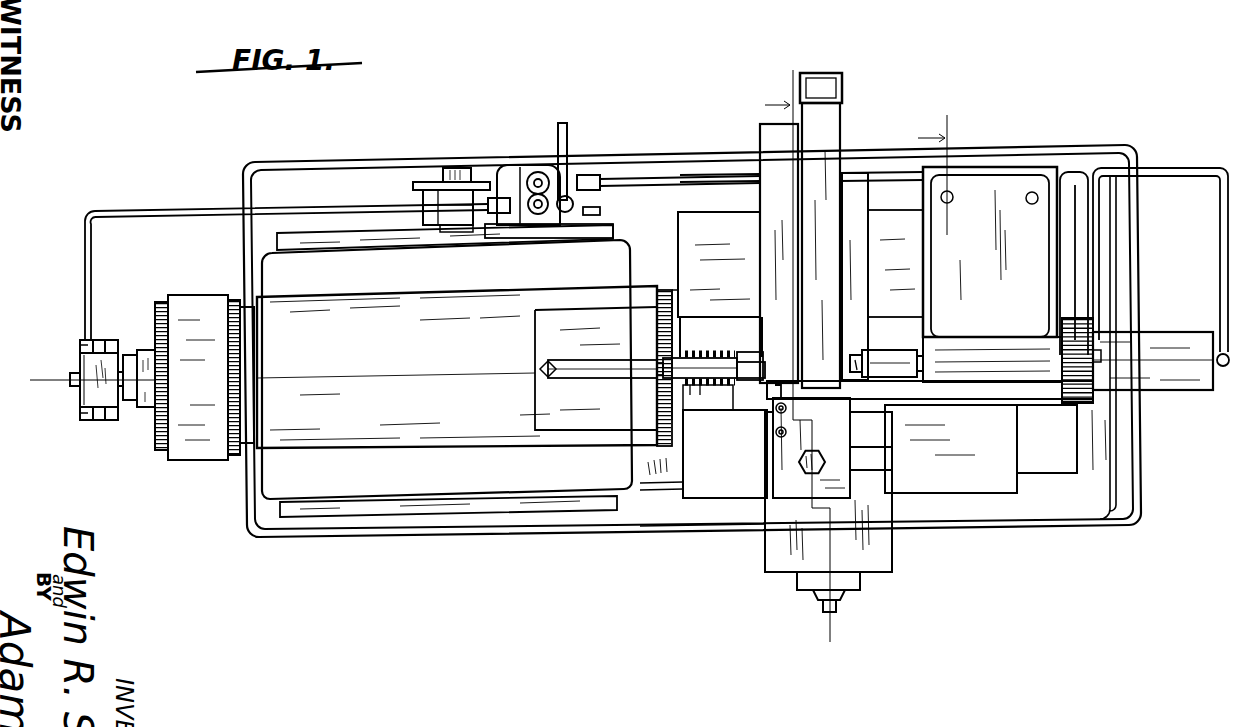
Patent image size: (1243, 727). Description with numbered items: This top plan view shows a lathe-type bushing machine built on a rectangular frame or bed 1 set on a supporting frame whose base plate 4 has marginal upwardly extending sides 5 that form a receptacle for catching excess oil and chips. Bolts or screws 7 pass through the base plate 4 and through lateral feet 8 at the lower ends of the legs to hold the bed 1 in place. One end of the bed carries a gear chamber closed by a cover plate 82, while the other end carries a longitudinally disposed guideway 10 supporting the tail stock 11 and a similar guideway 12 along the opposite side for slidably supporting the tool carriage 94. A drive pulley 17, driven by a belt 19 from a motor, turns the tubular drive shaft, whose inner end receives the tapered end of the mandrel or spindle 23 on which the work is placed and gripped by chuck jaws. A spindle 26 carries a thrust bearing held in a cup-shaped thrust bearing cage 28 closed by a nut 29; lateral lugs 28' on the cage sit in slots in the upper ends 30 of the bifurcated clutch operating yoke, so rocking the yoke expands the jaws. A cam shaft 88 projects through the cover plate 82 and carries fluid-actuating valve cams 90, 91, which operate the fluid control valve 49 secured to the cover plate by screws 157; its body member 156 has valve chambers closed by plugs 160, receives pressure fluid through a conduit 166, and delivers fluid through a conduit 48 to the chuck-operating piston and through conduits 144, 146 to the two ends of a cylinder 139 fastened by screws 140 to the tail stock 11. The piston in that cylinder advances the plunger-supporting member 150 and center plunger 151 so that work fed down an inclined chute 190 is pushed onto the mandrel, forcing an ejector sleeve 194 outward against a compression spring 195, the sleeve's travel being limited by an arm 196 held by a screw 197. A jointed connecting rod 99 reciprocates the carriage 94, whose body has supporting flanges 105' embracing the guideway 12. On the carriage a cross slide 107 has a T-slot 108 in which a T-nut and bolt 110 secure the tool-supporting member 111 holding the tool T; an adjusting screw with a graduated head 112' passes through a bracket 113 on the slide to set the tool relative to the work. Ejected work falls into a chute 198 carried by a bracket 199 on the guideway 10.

The frame or bed 1 is at (320, 472).
The base plate 4 is at (59, 392).
The marginal upwardly extending sides 5 is at (1132, 520).
The bolts or screws 7 is at (987, 217).
The lateral feet 8 is at (799, 357).
The guideway 10 is at (690, 226).
The tail stock 11 is at (1015, 338).
The guideway 12 is at (1063, 428).
The drive pulley 17 is at (162, 460).
The belt 19 is at (193, 462).
The mandrel or spindle 23 is at (706, 352).
The spindle 26 is at (132, 355).
The thrust bearing cage 28 is at (75, 391).
The lateral lugs 28' is at (101, 378).
The nut 29 is at (72, 376).
The upper ends of clutch operating yoke 30 is at (80, 420).
The conduit 48 is at (121, 214).
The fluid control valve 49 is at (520, 168).
The cover plate 82 is at (390, 508).
The cam shaft 88 is at (455, 168).
The fluid-actuating valve cam 90 is at (425, 217).
The fluid-actuating valve cam 91 is at (414, 180).
The tool carriage 94 is at (905, 487).
The jointed connecting rod 99 is at (655, 492).
The supporting flange 105' is at (841, 486).
The cross slide 107 is at (882, 560).
The T-slot 108 is at (894, 457).
The bolt 110 is at (800, 463).
The tool-supporting member 111 is at (783, 458).
The head of adjusting screw 112' is at (856, 614).
The bracket 113 is at (800, 578).
The cylinder 139 is at (1175, 342).
The screws 140 is at (1092, 328).
The conduit 144 is at (1203, 165).
The conduit 146 is at (1097, 248).
The plunger-supporting member 150 is at (897, 353).
The center plunger 151 is at (866, 380).
The valve body member 156 is at (600, 220).
The screws 157 is at (600, 211).
The plugs 160 is at (534, 207).
The conduit 166 is at (568, 122).
The inclined chute 190 is at (830, 125).
The ejector sleeve 194 is at (738, 392).
The compression spring 195 is at (714, 388).
The arm 196 is at (657, 372).
The screw 197 is at (546, 372).
The chute 198 is at (775, 152).
The bracket 199 is at (852, 180).
The tool T is at (775, 393).